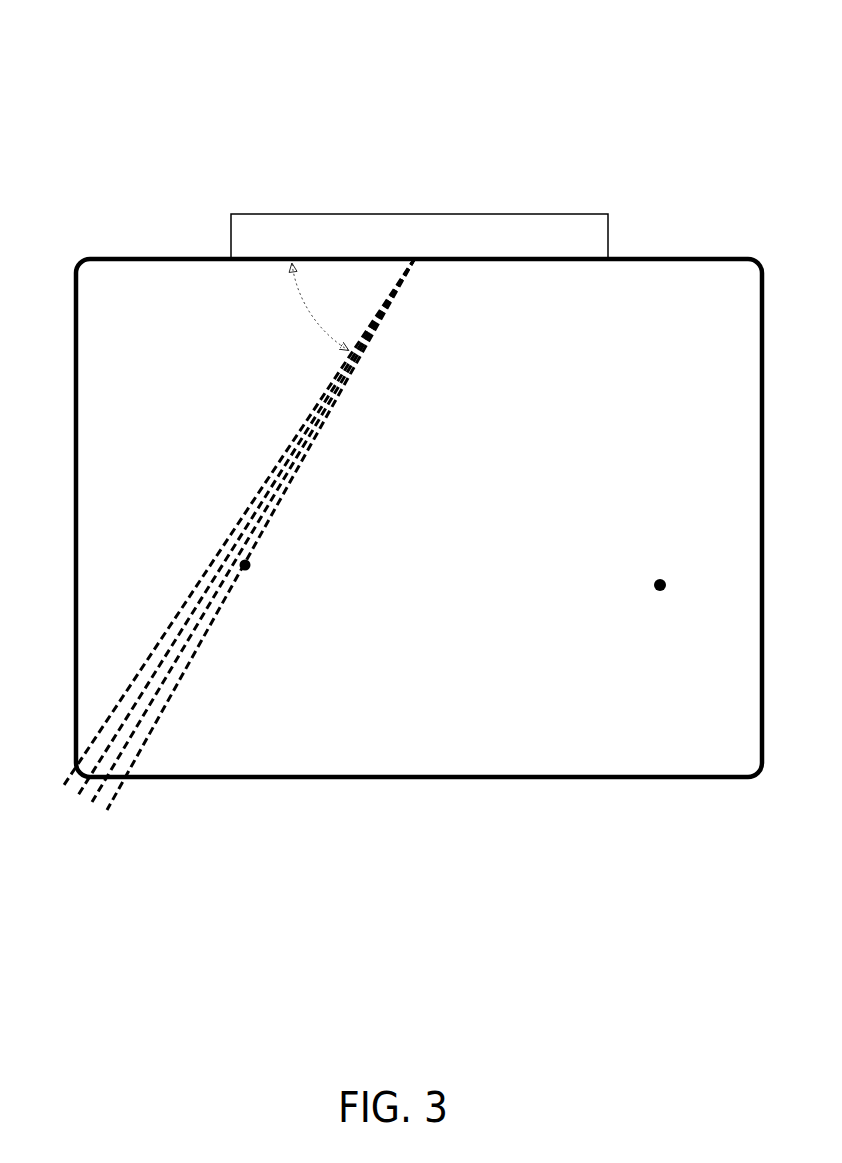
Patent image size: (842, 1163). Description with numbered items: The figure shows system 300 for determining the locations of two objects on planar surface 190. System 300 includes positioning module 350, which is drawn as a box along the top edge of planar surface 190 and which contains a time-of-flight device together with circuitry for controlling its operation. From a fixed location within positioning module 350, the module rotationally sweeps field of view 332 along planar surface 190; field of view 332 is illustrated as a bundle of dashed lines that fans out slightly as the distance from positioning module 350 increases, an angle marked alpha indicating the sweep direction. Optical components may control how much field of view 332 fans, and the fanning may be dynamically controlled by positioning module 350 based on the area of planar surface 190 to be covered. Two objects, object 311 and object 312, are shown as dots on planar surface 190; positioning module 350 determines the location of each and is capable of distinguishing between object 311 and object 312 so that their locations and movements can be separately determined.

The system 300 is at (683, 68).
The planar surface 190 is at (405, 784).
The positioning module 350 is at (419, 236).
The field of view 332 is at (272, 460).
The object 311 is at (254, 569).
The object 312 is at (652, 590).